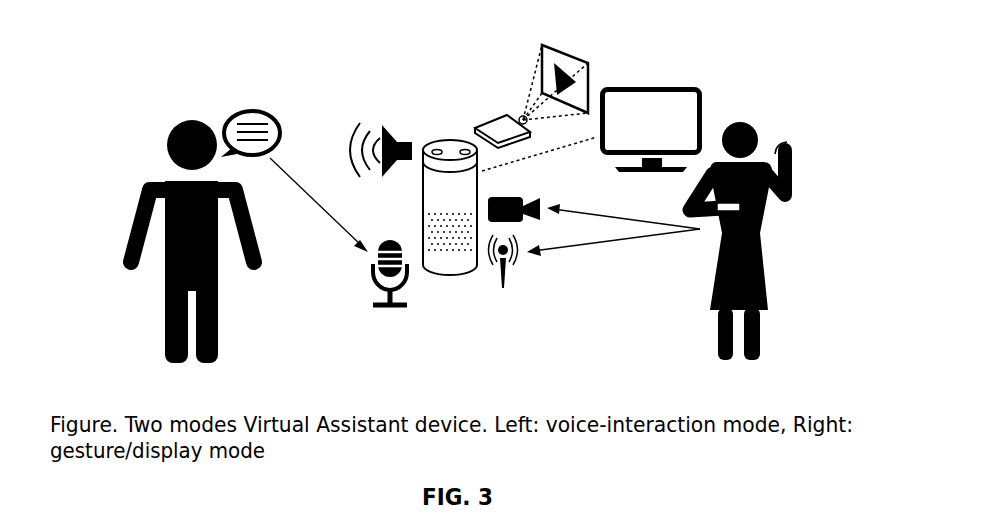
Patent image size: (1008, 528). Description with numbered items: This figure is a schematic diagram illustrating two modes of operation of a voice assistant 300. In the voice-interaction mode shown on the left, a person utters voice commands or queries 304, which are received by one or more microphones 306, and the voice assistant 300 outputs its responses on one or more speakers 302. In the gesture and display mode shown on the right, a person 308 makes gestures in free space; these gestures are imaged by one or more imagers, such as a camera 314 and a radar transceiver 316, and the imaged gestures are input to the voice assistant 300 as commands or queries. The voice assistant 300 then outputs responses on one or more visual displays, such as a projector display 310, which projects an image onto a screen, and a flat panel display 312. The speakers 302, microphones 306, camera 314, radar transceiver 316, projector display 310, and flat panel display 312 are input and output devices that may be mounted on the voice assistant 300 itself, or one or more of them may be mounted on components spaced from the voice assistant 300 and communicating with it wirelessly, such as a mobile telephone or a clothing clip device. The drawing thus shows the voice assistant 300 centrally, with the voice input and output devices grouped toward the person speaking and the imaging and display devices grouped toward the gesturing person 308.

The voice assistant 300 is at (458, 141).
The speaker 302 is at (410, 141).
The voice commands or queries 304 is at (282, 132).
The microphone 306 is at (376, 291).
The person 308 is at (764, 140).
The projector display 310 is at (527, 88).
The flat panel display 312 is at (693, 95).
The camera 314 is at (526, 195).
The radar transceiver 316 is at (518, 277).